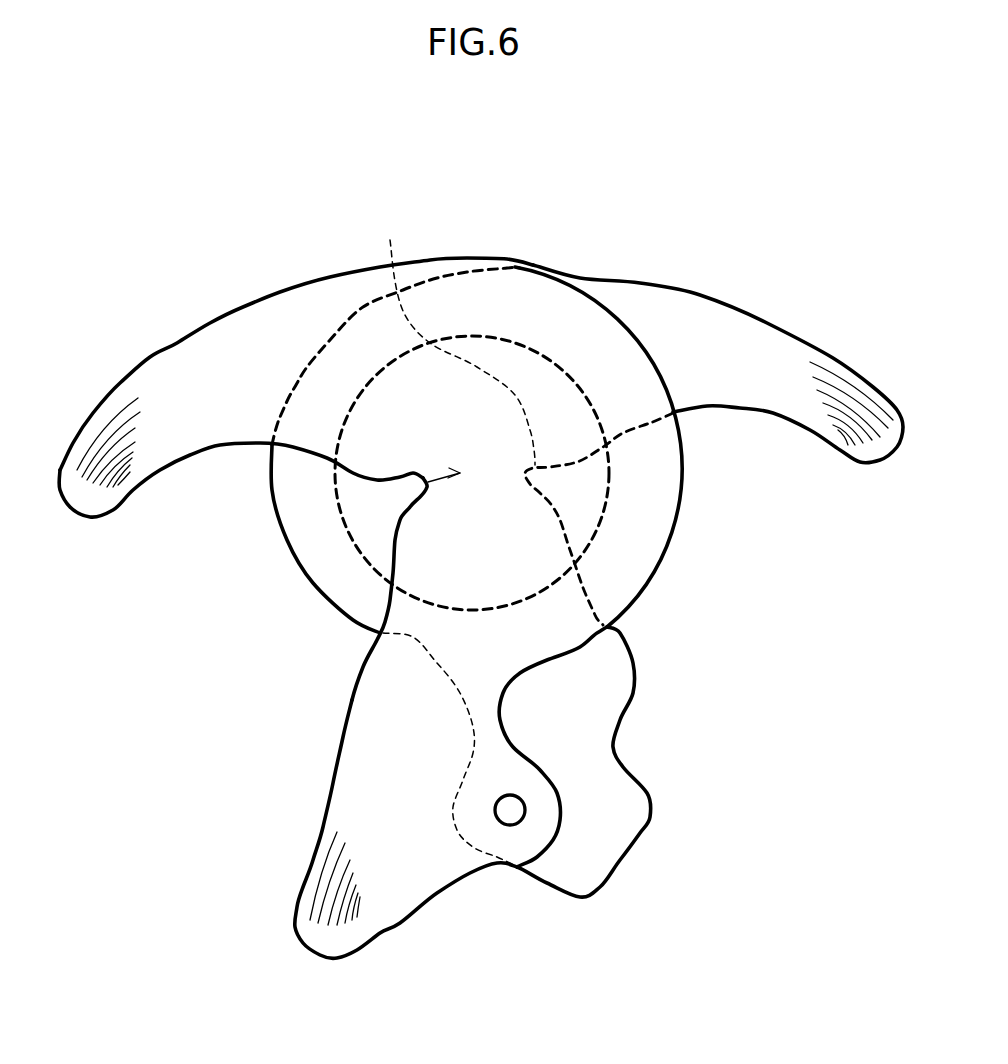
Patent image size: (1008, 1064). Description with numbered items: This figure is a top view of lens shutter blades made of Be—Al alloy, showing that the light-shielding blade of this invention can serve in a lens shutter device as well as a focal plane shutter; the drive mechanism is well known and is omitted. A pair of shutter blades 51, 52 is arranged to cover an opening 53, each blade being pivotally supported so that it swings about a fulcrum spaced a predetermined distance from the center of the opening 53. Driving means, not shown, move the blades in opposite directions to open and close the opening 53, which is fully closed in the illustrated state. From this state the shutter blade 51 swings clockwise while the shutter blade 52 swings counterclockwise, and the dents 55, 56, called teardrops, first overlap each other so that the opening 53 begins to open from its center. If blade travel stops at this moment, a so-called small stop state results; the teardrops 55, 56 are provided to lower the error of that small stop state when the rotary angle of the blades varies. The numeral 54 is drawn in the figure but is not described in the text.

The shutter blade 51 is at (178, 345).
The shutter blade 52 is at (756, 314).
The opening 53 is at (483, 475).
The pivot hole 54 is at (510, 812).
The dent (teardrop) 55 is at (417, 485).
The dent (teardrop) 56 is at (456, 537).